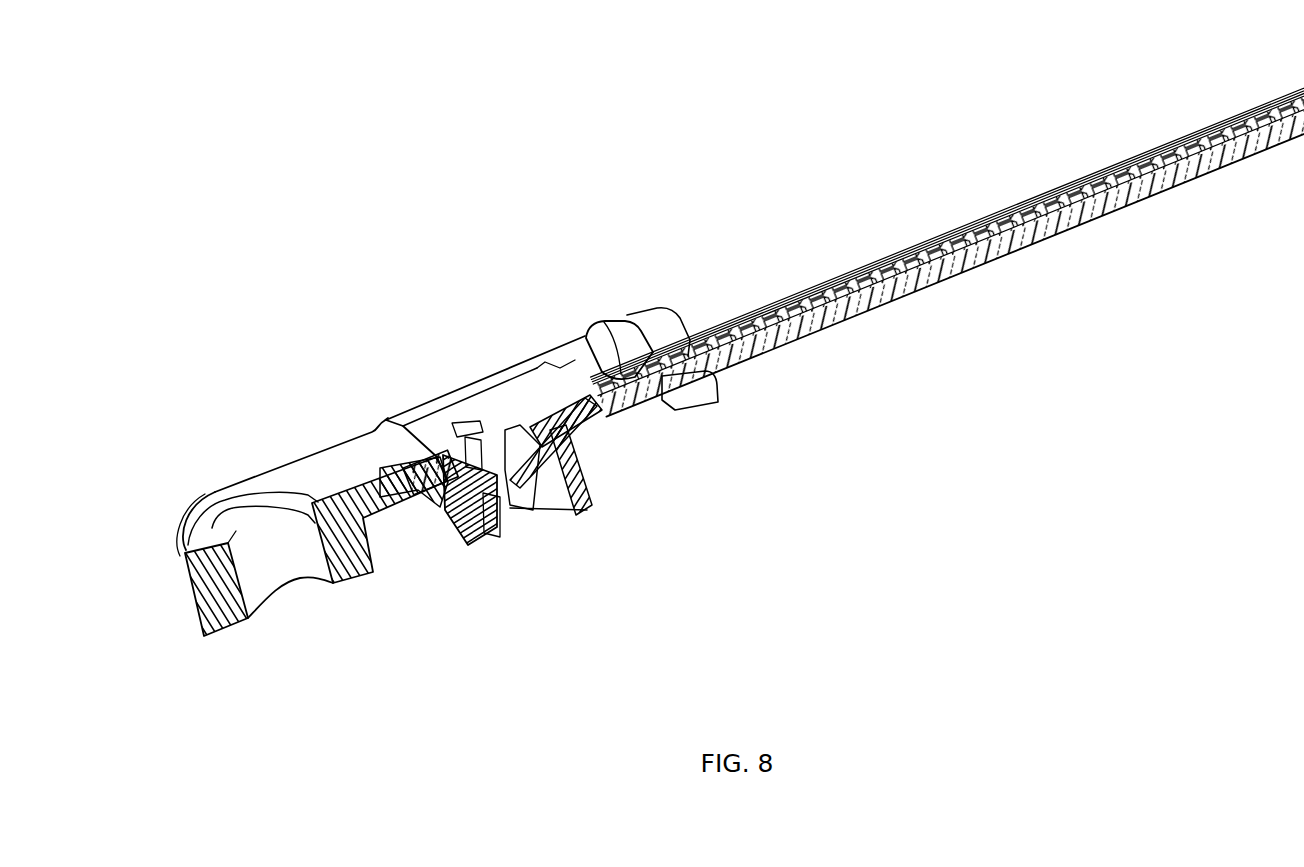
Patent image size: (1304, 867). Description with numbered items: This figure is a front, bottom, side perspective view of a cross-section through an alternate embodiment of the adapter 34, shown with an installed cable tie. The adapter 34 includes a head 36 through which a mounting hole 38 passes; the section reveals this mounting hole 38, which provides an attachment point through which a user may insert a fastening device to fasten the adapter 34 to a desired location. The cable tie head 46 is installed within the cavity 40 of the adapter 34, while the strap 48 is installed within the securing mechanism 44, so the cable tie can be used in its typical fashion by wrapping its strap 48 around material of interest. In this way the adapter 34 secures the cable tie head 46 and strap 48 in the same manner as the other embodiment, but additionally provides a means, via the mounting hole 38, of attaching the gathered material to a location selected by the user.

The adapter 34 is at (150, 466).
The head 36 is at (207, 643).
The mounting hole 38 is at (279, 575).
The cavity 40 is at (470, 396).
The securing mechanism 44 is at (608, 328).
The cable tie head 46 is at (470, 548).
The strap 48 is at (915, 288).